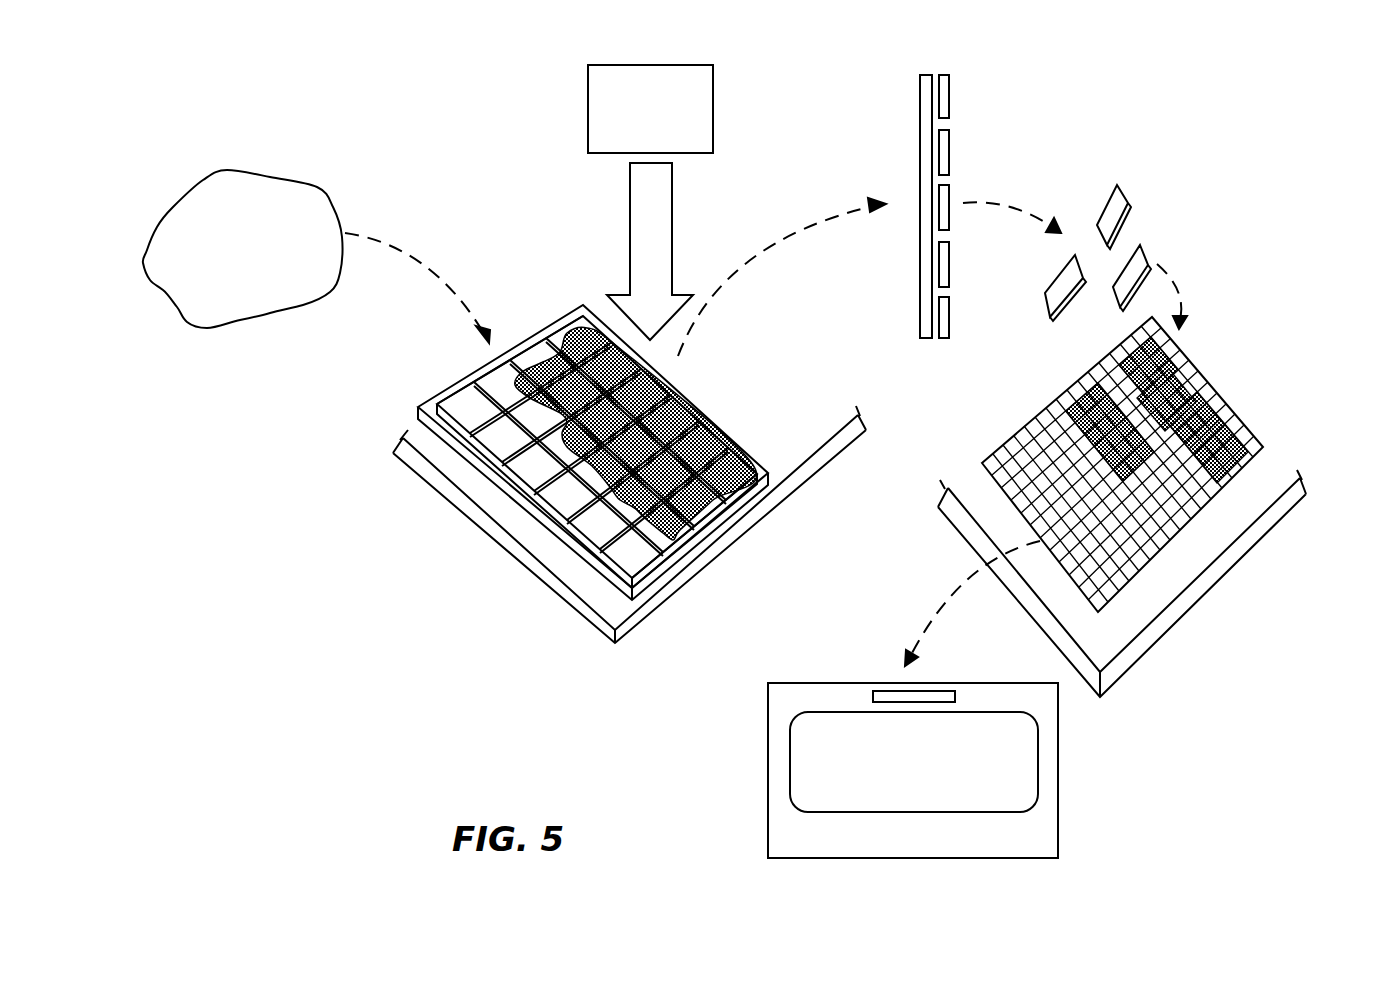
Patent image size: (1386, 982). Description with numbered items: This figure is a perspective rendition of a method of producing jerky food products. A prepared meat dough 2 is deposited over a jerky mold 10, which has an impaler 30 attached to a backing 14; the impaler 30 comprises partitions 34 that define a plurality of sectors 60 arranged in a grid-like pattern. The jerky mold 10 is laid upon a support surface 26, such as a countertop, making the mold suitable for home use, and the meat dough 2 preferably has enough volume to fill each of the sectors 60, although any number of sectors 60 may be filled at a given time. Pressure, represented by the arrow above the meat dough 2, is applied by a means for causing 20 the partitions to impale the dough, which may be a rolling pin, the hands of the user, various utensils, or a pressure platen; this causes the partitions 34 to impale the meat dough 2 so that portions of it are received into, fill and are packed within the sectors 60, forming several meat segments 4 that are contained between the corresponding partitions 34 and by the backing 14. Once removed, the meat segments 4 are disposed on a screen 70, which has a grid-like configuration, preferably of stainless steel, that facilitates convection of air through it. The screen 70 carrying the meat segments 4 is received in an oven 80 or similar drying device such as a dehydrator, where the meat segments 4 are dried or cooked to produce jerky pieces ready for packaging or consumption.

The meat dough 2 is at (345, 210).
The meat segments 4 is at (947, 95).
The jerky mold 10 is at (690, 400).
The backing 14 is at (455, 383).
The means for causing 20 is at (715, 80).
The support surface 26 is at (447, 464).
The impaler 30 is at (558, 326).
The partitions 34 is at (627, 522).
The sectors 60 is at (590, 513).
The screen 70 is at (1140, 570).
The oven 80 is at (768, 813).